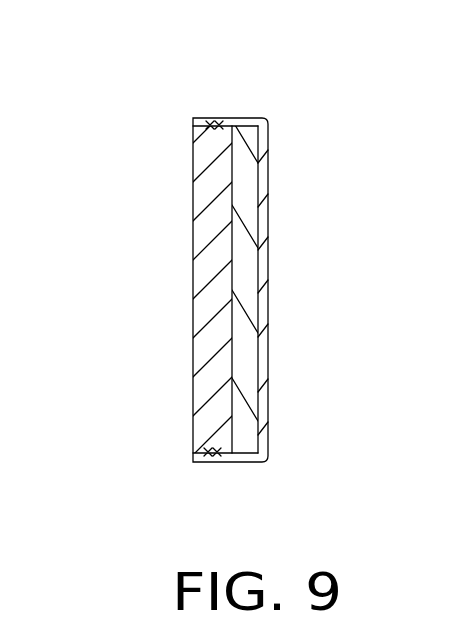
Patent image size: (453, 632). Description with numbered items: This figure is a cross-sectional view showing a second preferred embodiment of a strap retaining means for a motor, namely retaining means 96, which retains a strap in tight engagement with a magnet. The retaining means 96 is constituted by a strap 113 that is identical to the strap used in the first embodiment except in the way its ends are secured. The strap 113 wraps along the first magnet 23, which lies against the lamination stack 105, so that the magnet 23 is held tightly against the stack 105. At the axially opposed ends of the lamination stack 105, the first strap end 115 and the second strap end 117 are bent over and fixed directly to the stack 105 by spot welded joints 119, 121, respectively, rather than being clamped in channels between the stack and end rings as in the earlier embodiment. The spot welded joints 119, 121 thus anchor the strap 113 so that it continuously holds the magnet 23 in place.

The retaining means 96 is at (172, 116).
The lamination stack 105 is at (217, 260).
The first magnet 23 is at (245, 283).
The strap 113 is at (265, 187).
The first strap end 115 is at (238, 121).
The second strap end 117 is at (230, 465).
The spot welded joint 119 is at (213, 127).
The spot welded joint 121 is at (205, 450).